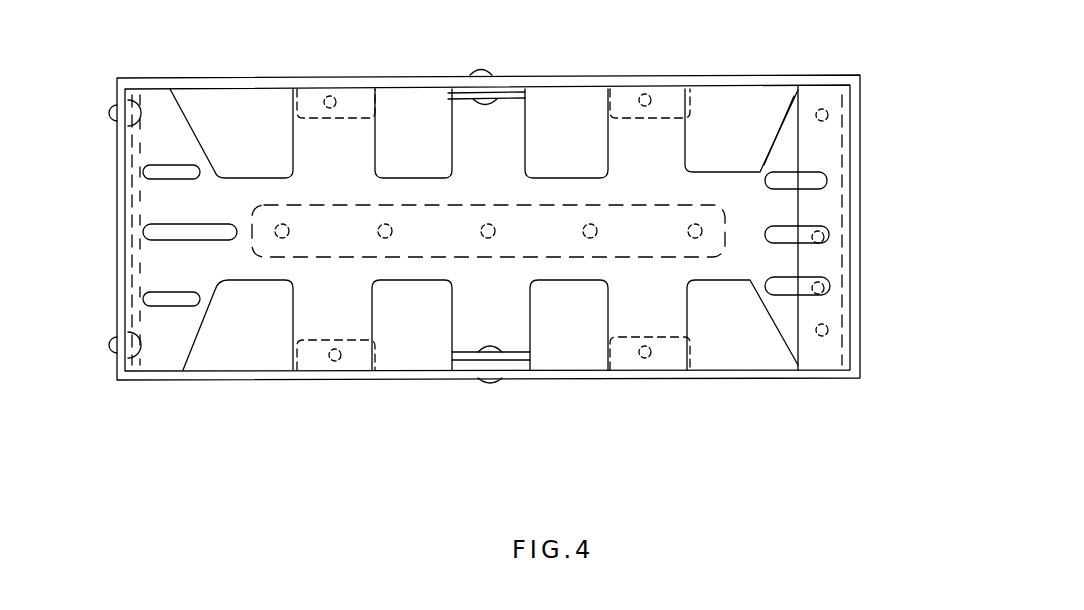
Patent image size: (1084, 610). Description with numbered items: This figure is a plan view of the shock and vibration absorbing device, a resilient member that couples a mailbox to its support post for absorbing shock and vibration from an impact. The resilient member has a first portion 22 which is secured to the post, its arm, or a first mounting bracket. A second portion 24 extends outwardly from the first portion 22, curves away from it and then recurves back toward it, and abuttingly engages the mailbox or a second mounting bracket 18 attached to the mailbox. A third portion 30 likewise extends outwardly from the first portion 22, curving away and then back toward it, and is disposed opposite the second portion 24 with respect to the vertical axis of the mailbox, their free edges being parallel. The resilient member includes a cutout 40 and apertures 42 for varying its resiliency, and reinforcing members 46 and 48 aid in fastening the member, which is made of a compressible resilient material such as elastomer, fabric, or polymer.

The second mounting bracket 18 is at (232, 77).
The first portion 22 is at (540, 197).
The third portion 30 is at (473, 138).
The cutout 40 is at (752, 355).
The second portion 24 is at (470, 313).
The reinforcing member 48 is at (315, 86).
The reinforcing member 46 is at (462, 223).
The aperture 42 is at (175, 296).